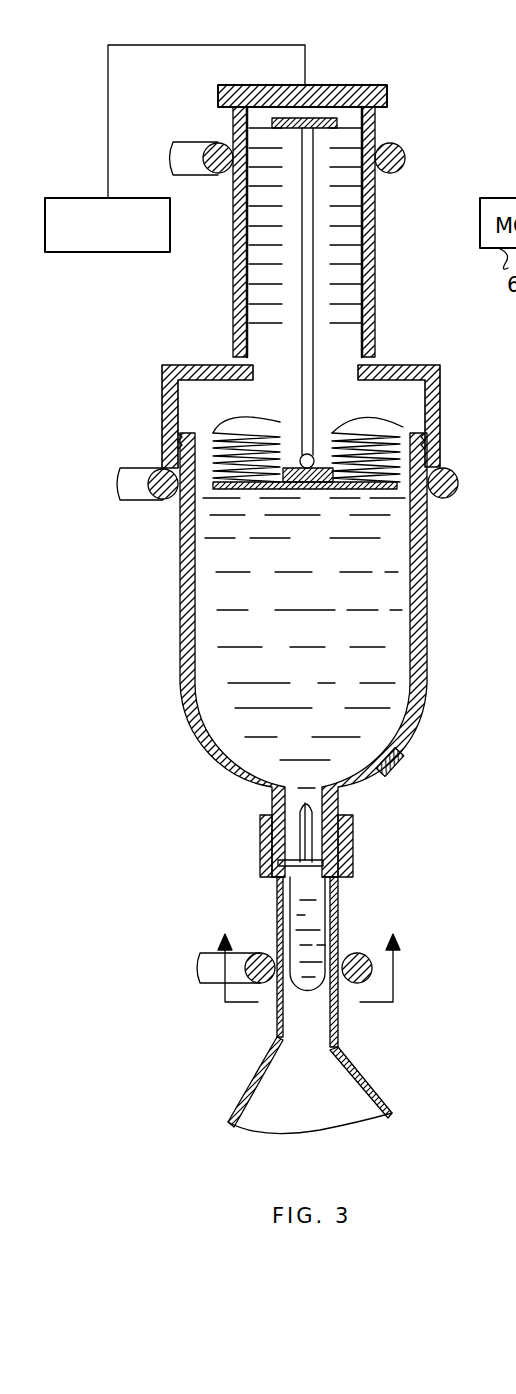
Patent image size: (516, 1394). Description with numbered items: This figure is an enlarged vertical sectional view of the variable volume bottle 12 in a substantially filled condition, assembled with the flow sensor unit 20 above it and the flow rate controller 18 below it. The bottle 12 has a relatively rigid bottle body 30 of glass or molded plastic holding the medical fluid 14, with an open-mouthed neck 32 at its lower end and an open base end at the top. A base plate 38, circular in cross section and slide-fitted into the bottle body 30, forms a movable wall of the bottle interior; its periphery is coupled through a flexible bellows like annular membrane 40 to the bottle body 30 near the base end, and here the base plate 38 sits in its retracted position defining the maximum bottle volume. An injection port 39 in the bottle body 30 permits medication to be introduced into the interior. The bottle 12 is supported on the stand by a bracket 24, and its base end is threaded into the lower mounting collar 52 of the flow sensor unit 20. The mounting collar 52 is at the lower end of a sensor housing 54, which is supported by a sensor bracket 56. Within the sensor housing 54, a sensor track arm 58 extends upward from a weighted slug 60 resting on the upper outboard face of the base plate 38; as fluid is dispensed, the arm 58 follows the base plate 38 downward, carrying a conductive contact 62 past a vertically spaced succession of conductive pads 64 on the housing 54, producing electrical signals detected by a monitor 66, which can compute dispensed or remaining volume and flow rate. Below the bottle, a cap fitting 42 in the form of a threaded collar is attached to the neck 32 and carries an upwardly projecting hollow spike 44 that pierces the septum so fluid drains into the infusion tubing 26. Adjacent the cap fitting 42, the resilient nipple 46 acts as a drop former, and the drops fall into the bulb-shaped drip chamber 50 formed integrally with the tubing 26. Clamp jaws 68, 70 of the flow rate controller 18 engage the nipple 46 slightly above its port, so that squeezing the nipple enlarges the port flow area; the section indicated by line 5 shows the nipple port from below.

The variable volume bottle 12 is at (195, 781).
The medical fluid 14 is at (237, 665).
The flow rate controller 18 is at (210, 998).
The flow sensor unit 20 is at (392, 53).
The bracket 24 is at (138, 492).
The infusion tubing 26 is at (277, 1037).
The bottle body 30 is at (180, 605).
The neck 32 is at (340, 802).
The base plate 38 is at (253, 489).
The injection port 39 is at (405, 754).
The bellows like annular membrane 40 is at (385, 430).
The cap fitting 42 is at (262, 828).
The hollow spike 44 is at (303, 805).
The resilient nipple 46 is at (325, 992).
The drip chamber 50 is at (236, 1108).
The mounting collar 52 is at (162, 400).
The sensor housing 54 is at (366, 284).
The sensor bracket 56 is at (193, 147).
The sensor track arm 58 is at (313, 355).
The weighted slug 60 is at (296, 490).
The conductive contact 62 is at (323, 137).
The conductive pads 64 is at (248, 262).
The monitor 66 is at (62, 164).
The clamp jaw 68 is at (262, 955).
The clamp jaw 70 is at (373, 973).
The section line 5- 5 is at (309, 984).